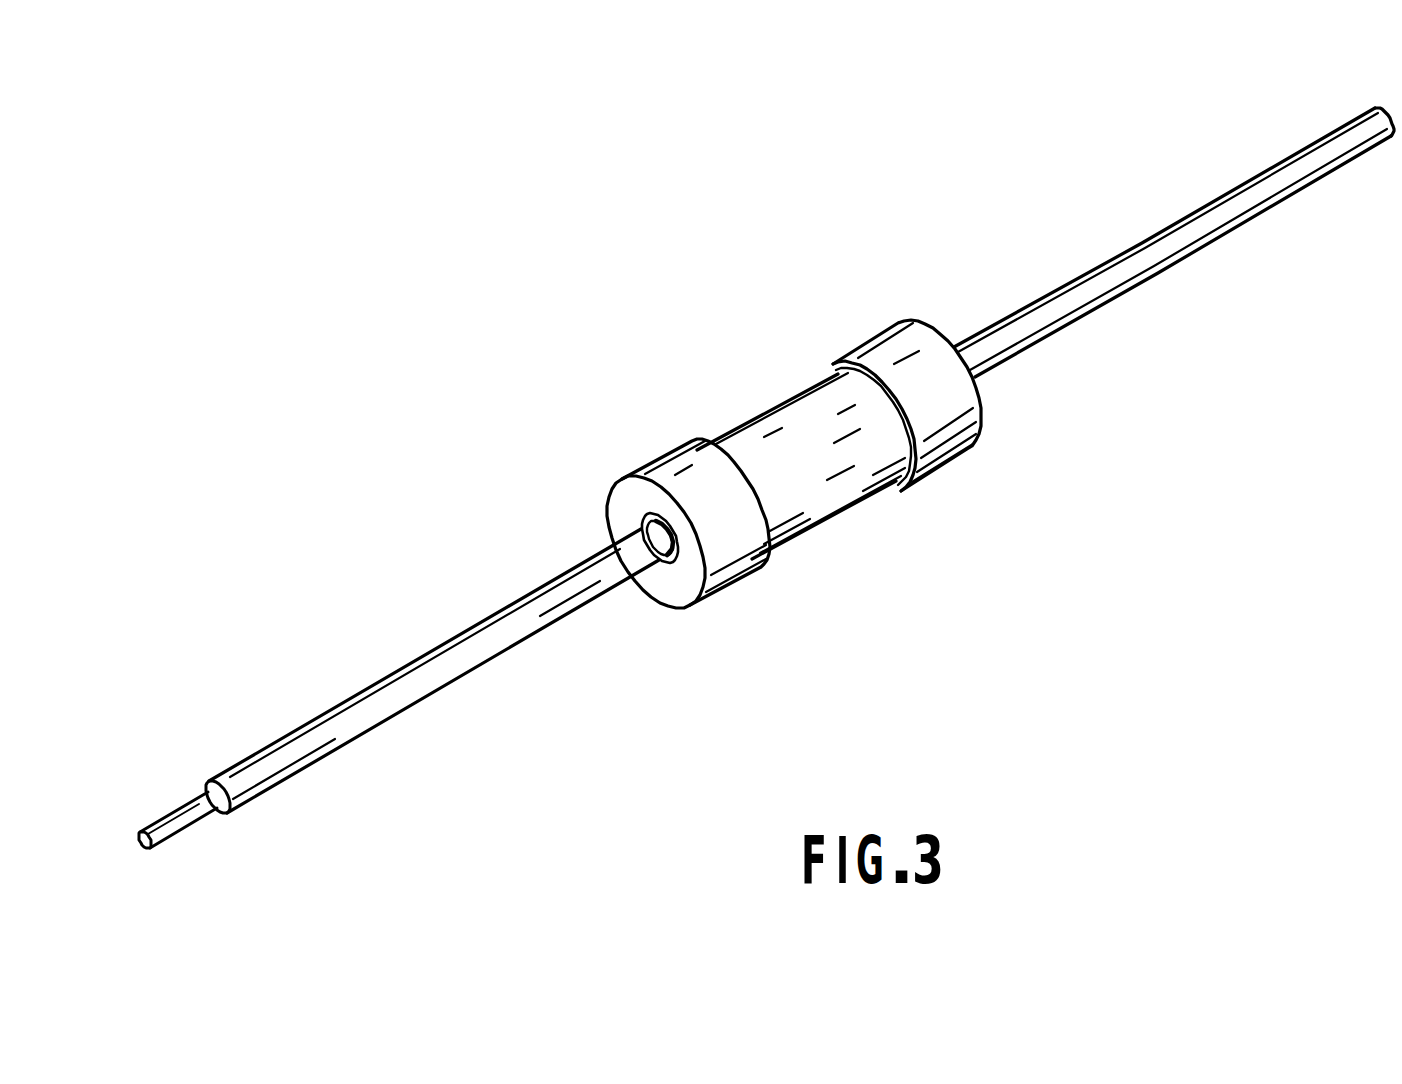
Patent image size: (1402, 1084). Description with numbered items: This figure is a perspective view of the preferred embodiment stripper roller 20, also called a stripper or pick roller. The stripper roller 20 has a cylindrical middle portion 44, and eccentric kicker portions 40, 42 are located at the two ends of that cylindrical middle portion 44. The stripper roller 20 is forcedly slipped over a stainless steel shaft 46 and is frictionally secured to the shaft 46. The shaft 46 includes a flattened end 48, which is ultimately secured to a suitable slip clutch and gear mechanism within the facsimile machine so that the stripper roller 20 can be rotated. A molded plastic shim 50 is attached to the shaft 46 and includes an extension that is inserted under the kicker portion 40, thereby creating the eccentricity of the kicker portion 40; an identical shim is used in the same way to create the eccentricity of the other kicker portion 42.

The stripper roller 20 is at (728, 478).
The eccentric kicker portion 40 is at (636, 501).
The eccentric kicker portion 42 is at (872, 340).
The cylindrical middle portion 44 is at (766, 404).
The shaft 46 is at (453, 632).
The flattened end 48 is at (173, 807).
The molded plastic shim 50 is at (612, 498).